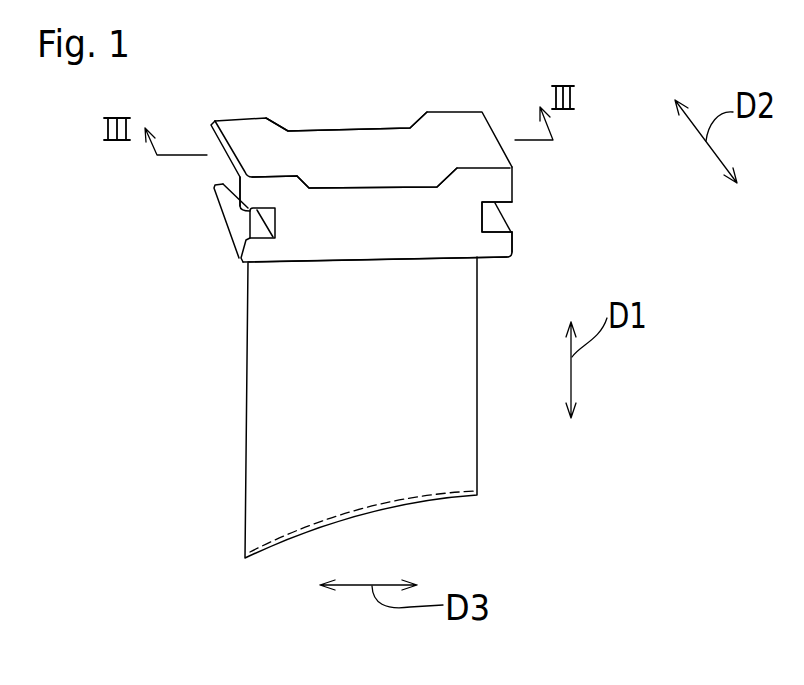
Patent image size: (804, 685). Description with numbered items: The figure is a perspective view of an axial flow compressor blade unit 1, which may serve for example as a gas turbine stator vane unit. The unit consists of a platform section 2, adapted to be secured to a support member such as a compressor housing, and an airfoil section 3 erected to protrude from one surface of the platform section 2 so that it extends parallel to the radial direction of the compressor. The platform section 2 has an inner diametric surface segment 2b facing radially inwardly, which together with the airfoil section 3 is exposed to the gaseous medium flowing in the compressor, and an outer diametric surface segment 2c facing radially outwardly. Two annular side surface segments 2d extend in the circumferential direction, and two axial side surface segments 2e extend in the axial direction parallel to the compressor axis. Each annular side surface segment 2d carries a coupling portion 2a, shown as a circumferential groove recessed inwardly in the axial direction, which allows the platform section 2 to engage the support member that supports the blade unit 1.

The axial flow compressor blade unit 1 is at (488, 316).
The platform section 2 is at (455, 195).
The coupling portion 2a is at (253, 227).
The inner diametric surface segment 2b is at (274, 264).
The outer diametric surface segment 2c is at (382, 148).
The annular side surface segment 2d is at (217, 207).
The axial side surface segment 2e is at (325, 238).
The airfoil section 3 is at (452, 408).